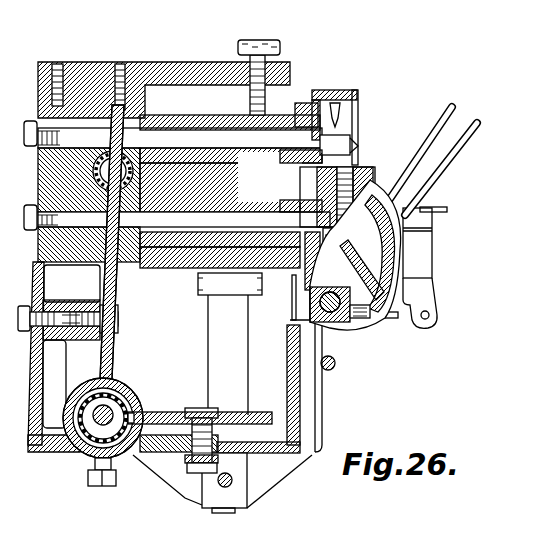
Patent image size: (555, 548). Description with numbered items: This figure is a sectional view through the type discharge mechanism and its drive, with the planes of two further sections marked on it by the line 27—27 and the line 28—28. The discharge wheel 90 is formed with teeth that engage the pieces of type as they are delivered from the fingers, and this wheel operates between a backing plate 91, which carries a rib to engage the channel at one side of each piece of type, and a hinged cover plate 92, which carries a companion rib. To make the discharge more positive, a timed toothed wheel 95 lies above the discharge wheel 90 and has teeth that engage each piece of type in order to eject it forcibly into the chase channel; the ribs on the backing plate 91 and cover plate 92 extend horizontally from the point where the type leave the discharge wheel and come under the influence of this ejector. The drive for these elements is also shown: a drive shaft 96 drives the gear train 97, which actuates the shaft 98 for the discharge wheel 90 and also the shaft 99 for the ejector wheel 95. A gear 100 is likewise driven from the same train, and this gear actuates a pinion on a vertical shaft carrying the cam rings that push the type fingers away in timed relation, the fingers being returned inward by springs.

The line 27— 27 is at (337, 130).
The line 28— 28 is at (115, 60).
The discharge wheel 90 is at (318, 192).
The backing plate 91 is at (318, 166).
The hinged cover plate 92 is at (352, 162).
The timed toothed wheel 95 is at (338, 128).
The drive shaft 96 is at (112, 405).
The gear train 97 is at (118, 288).
The shaft for the discharge wheel 98 is at (173, 266).
The shaft for the ejector wheel 99 is at (194, 134).
The gear 100 is at (148, 415).